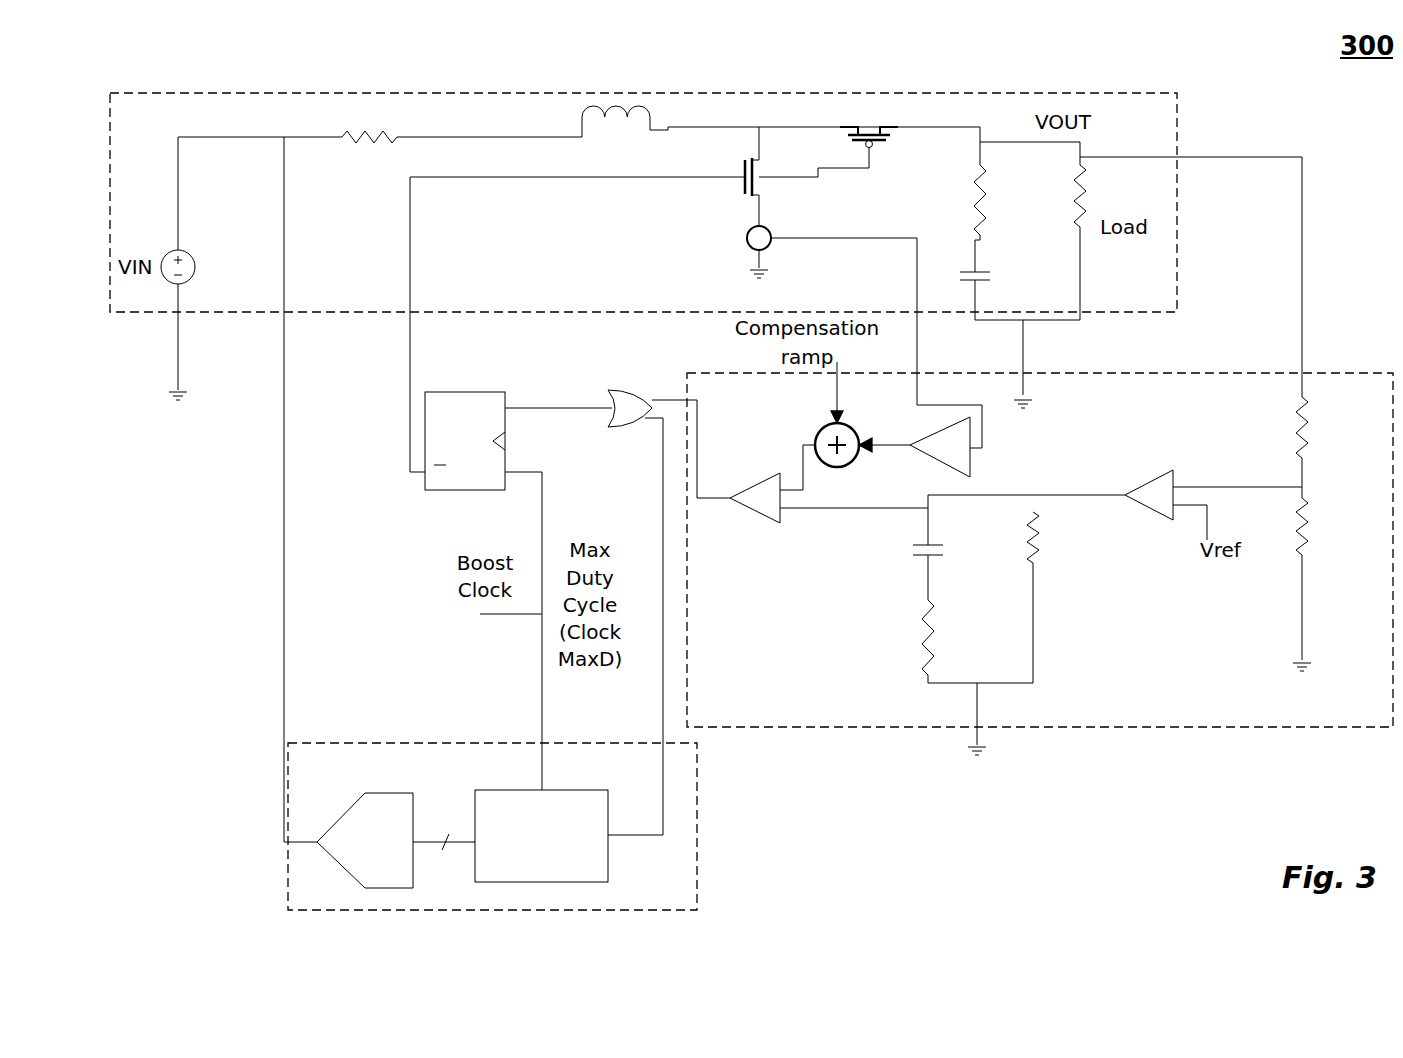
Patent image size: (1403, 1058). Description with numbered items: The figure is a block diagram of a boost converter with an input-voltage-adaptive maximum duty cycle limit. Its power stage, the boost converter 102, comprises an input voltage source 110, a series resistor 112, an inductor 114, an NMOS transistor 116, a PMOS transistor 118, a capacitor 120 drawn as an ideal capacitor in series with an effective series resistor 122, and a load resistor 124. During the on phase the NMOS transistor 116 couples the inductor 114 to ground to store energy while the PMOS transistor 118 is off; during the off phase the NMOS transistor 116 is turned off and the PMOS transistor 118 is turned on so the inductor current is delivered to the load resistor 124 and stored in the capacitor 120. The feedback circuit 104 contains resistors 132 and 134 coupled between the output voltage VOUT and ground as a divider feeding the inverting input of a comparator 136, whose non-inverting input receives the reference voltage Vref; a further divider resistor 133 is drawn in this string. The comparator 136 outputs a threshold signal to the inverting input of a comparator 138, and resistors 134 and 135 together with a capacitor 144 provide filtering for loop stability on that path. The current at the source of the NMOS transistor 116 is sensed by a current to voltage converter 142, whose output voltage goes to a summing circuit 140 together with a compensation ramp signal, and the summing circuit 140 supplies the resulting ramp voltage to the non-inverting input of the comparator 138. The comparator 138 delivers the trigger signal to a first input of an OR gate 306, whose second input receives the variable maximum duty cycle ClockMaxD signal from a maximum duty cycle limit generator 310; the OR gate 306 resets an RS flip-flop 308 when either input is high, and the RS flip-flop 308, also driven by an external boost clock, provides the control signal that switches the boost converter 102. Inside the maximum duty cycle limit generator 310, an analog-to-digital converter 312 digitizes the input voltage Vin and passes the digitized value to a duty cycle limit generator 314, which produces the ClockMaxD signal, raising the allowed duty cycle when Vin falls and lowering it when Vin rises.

The boost converter 102 is at (362, 313).
The feedback circuit 104 is at (722, 730).
The input voltage (VIN) source 110 is at (196, 265).
The series resistor 112 is at (355, 143).
The inductor 114 is at (600, 112).
The NMOS transistor 116 is at (737, 183).
The PMOS transistor 118 is at (868, 135).
The capacitor 120 is at (985, 270).
The effective series resistor 122 is at (972, 175).
The load resistor 124 is at (1075, 185).
The resistor 132 is at (1292, 410).
The feedback divider lower resistor 133 is at (1302, 520).
The resistor 134 is at (1038, 552).
The resistor 135 is at (932, 638).
The comparator 136 is at (1148, 510).
The comparator 138 is at (760, 515).
The summing circuit 140 is at (816, 428).
The current to voltage converter 142 is at (968, 465).
The capacitor 144 is at (906, 540).
The OR gate 306 is at (620, 392).
The RS flip-flop 308 is at (425, 488).
The maximum duty cycle limit generator 310 is at (288, 812).
The analog-to-digital converter 312 is at (383, 790).
The duty cycle limit generator 314 is at (503, 790).